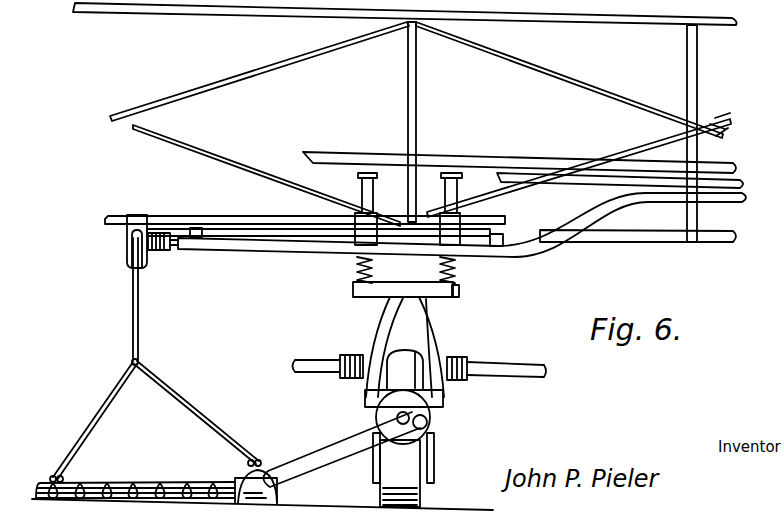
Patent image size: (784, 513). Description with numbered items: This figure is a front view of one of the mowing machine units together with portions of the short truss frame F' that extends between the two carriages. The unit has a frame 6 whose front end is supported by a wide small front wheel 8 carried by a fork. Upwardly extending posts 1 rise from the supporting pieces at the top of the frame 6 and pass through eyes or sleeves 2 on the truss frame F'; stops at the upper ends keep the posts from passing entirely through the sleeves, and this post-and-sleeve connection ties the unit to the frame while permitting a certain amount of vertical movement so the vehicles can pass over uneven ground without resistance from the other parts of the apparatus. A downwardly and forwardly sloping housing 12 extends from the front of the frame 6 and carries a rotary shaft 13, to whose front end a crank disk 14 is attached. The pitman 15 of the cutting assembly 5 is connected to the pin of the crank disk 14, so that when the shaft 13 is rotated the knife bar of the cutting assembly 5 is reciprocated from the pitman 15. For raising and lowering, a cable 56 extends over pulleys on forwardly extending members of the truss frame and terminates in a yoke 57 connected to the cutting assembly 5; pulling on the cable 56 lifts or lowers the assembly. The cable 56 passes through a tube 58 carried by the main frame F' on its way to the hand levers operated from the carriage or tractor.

The post 1 is at (373, 190).
The eye or sleeve 2 is at (352, 212).
The cutting assembly 5 is at (183, 483).
The frame 6 is at (383, 320).
The front wheel 8 is at (421, 1).
The housing 12 is at (410, 372).
The rotary shaft 13 is at (397, 416).
The crank disk 14 is at (431, 416).
The pitman 15 is at (347, 456).
The cable 56 is at (138, 337).
The yoke 57 is at (206, 418).
The tube 58 is at (305, 252).
The short truss frame F' is at (435, 132).